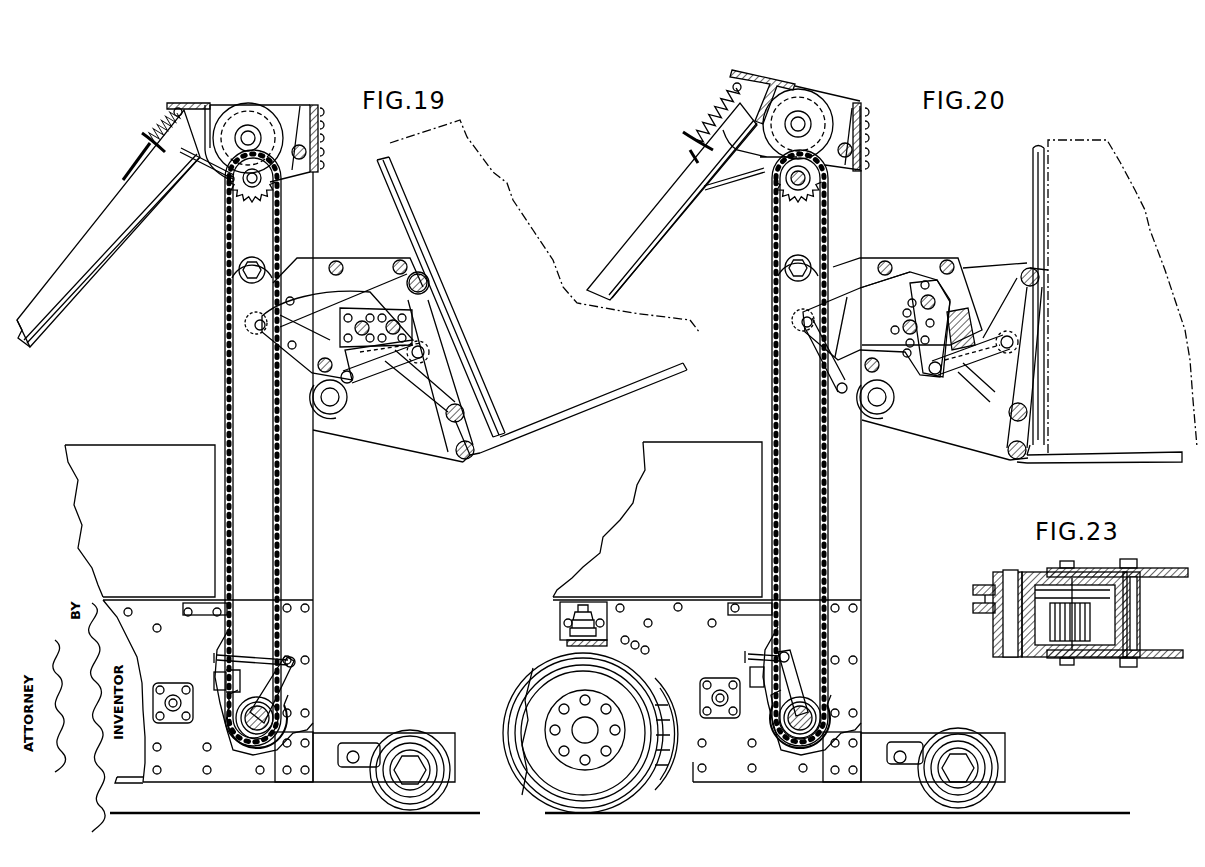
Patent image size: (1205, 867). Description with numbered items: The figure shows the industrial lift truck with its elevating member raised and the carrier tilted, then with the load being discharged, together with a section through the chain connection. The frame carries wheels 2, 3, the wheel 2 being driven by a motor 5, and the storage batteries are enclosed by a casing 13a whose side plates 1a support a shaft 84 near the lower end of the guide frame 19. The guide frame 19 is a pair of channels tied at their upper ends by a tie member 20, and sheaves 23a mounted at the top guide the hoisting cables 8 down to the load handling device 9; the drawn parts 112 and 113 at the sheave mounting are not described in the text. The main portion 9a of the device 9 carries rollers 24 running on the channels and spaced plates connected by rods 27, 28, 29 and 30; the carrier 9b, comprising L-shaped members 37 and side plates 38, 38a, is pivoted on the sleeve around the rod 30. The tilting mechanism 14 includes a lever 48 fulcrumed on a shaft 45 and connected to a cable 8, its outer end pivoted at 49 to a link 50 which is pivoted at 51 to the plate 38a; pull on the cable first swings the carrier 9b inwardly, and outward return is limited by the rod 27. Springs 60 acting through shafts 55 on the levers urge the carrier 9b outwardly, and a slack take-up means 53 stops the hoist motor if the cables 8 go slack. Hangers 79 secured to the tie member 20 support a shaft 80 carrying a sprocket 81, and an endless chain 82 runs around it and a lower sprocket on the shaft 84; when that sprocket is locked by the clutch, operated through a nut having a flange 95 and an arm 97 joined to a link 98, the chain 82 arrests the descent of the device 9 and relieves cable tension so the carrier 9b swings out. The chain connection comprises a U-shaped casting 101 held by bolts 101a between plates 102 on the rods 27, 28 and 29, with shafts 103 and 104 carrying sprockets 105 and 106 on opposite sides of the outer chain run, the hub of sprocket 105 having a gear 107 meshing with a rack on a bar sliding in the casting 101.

In FIG. 19, the side plate 1a is at (208, 691).
In FIG. 20, the side plate 1a is at (707, 691).
In FIG. 20, the wheel 2 is at (525, 783).
In FIG. 19, the wheel 3 is at (373, 790).
In FIG. 20, the wheel 3 is at (920, 790).
In FIG. 20, the motor 5 is at (662, 684).
In FIG. 19, the hoisting element 8 is at (135, 214).
In FIG. 20, the hoisting element 8 is at (840, 240).
In FIG. 19, the load handling device 9 is at (433, 440).
In FIG. 20, the load handling device 9 is at (989, 440).
In FIG. 19, the main portion 9a is at (376, 446).
In FIG. 20, the main portion 9a is at (922, 445).
In FIG. 19, the load carrying portion 9b is at (441, 297).
In FIG. 20, the load carrying portion 9b is at (1052, 296).
In FIG. 19, the casing 13a is at (140, 521).
In FIG. 20, the casing 13a is at (657, 519).
In FIG. 19, the tilting mechanism 14 is at (337, 328).
In FIG. 20, the tilting mechanism 14 is at (876, 324).
In FIG. 19, the guide frame 19 is at (324, 477).
In FIG. 20, the guide frame 19 is at (873, 476).
In FIG. 19, the tie member 20 is at (322, 131).
In FIG. 20, the tie member 20 is at (867, 129).
In FIG. 19, the sheave 23a is at (260, 112).
In FIG. 20, the sheave 23a is at (790, 100).
In FIG. 19, the roller 24 is at (250, 257).
In FIG. 20, the roller 24 is at (804, 255).
In FIG. 19, the rod 27 is at (318, 366).
In FIG. 20, the rod 27 is at (880, 365).
In FIG. 19, the rod 28 is at (348, 254).
In FIG. 20, the rod 28 is at (895, 257).
In FIG. 19, the rod 29 is at (398, 261).
In FIG. 20, the rod 29 is at (948, 260).
In FIG. 19, the rod 30 is at (452, 458).
In FIG. 20, the rod 30 is at (1010, 460).
In FIG. 19, the L-shaped member 37 is at (562, 418).
In FIG. 20, the L-shaped member 37 is at (1107, 452).
In FIG. 19, the side plate 38 is at (437, 434).
In FIG. 20, the side plate 38 is at (1003, 433).
In FIG. 19, the side plate 38a is at (418, 392).
In FIG. 20, the side plate 38a is at (993, 390).
In FIG. 19, the shaft 45 is at (356, 328).
In FIG. 20, the shaft 45 is at (900, 335).
In FIG. 19, the lever 48 is at (335, 294).
In FIG. 20, the lever 48 is at (880, 285).
In FIG. 19, the pivot 49 is at (355, 372).
In FIG. 20, the pivot 49 is at (937, 365).
In FIG. 19, the link 50 is at (370, 385).
In FIG. 20, the link 50 is at (966, 373).
In FIG. 19, the pivot 51 is at (428, 345).
In FIG. 20, the pivot 51 is at (1015, 343).
In FIG. 19, the slack take-up means 53 is at (151, 144).
In FIG. 20, the slack take-up means 53 is at (706, 123).
In FIG. 19, the shaft 55 is at (412, 330).
In FIG. 20, the shaft 55 is at (913, 292).
In FIG. 20, the spring 60 is at (957, 322).
In FIG. 19, the hanger 79 is at (210, 182).
In FIG. 20, the hanger 79 is at (734, 179).
In FIG. 19, the shaft 80 is at (275, 186).
In FIG. 20, the shaft 80 is at (783, 184).
In FIG. 19, the sprocket 81 is at (252, 202).
In FIG. 20, the sprocket 81 is at (798, 202).
In FIG. 19, the sprocket chain 82 is at (228, 232).
In FIG. 20, the sprocket chain 82 is at (776, 222).
In FIG. 23, the sprocket chain 82 is at (970, 590).
In FIG. 19, the shaft 84 is at (256, 748).
In FIG. 20, the shaft 84 is at (818, 710).
In FIG. 19, the flange 95 is at (225, 732).
In FIG. 20, the flange 95 is at (800, 748).
In FIG. 19, the arm 97 is at (288, 680).
In FIG. 20, the arm 97 is at (810, 682).
In FIG. 19, the link 98 is at (255, 664).
In FIG. 20, the link 98 is at (762, 661).
In FIG. 23, the U-shaped casting 101 is at (1140, 626).
In FIG. 23, the bolt 101a is at (1135, 667).
In FIG. 19, the plate 102 is at (360, 258).
In FIG. 20, the plate 102 is at (920, 258).
In FIG. 23, the plate 102 is at (1140, 570).
In FIG. 23, the shaft 103 is at (1070, 666).
In FIG. 23, the shaft 104 is at (1003, 660).
In FIG. 23, the sprocket 105 is at (1085, 568).
In FIG. 19, the sprocket 106 is at (261, 335).
In FIG. 20, the sprocket 106 is at (805, 333).
In FIG. 23, the sprocket 106 is at (972, 608).
In FIG. 23, the gear 107 is at (1048, 640).
In FIG. 19, the hinge strip 112 is at (300, 112).
In FIG. 20, the hinge strip 112 is at (840, 110).
In FIG. 19, the bolt 113 is at (308, 152).
In FIG. 20, the bolt 113 is at (855, 150).